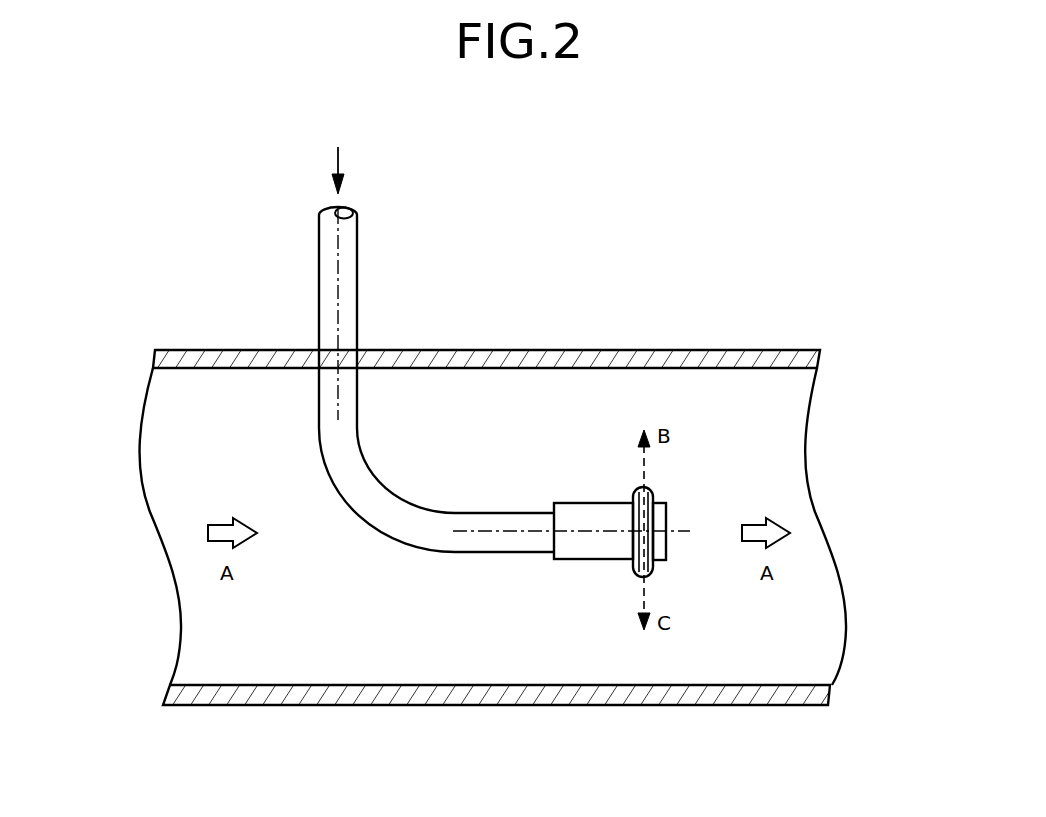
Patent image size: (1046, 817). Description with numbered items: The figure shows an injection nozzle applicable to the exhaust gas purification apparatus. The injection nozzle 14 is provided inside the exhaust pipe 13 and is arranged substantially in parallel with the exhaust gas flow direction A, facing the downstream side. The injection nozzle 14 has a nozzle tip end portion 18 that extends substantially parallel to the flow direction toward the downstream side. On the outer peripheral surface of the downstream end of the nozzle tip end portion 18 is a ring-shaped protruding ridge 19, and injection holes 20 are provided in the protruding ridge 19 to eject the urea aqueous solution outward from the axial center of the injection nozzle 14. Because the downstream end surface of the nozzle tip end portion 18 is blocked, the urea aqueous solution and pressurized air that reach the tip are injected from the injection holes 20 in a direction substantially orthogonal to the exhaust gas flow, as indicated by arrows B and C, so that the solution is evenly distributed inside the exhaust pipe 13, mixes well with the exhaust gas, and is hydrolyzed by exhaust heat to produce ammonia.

The exhaust pipe 13 is at (463, 347).
The injection nozzle 14 is at (492, 553).
The nozzle tip end portion 18 is at (588, 559).
The protruding ridge 19 is at (655, 498).
The injection holes 20 is at (655, 568).